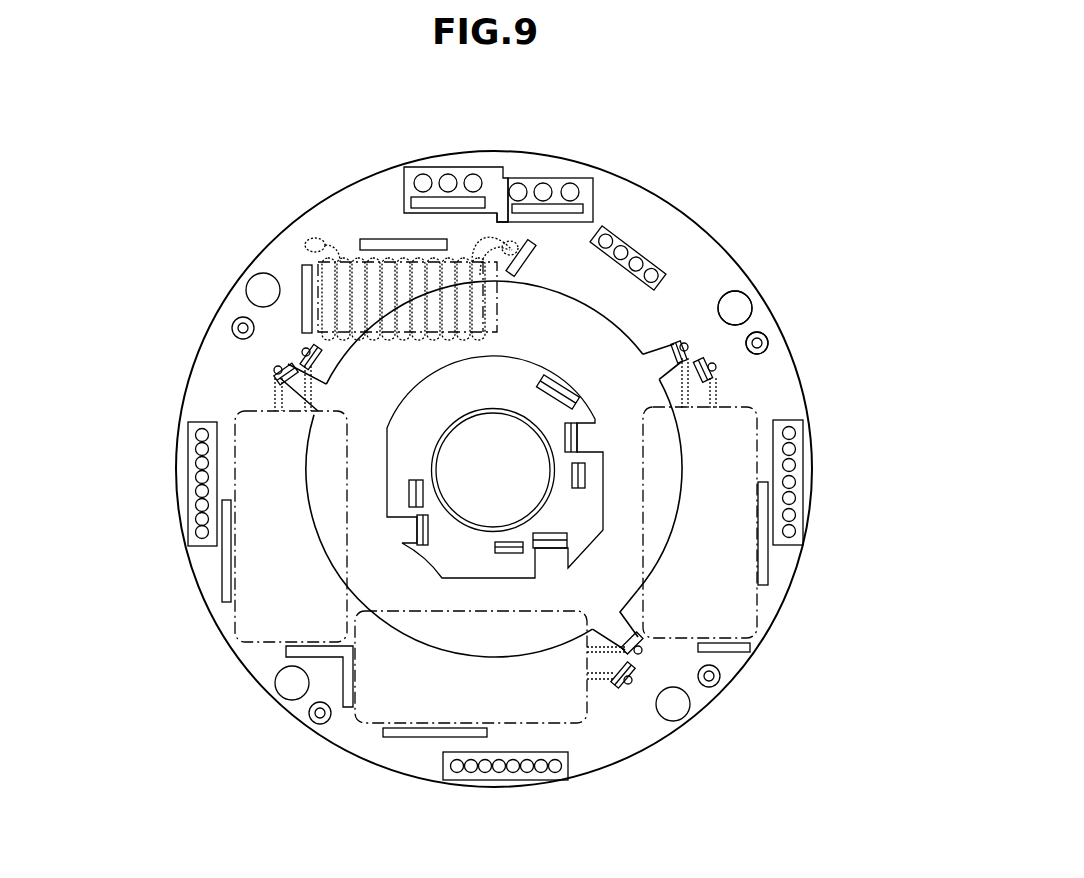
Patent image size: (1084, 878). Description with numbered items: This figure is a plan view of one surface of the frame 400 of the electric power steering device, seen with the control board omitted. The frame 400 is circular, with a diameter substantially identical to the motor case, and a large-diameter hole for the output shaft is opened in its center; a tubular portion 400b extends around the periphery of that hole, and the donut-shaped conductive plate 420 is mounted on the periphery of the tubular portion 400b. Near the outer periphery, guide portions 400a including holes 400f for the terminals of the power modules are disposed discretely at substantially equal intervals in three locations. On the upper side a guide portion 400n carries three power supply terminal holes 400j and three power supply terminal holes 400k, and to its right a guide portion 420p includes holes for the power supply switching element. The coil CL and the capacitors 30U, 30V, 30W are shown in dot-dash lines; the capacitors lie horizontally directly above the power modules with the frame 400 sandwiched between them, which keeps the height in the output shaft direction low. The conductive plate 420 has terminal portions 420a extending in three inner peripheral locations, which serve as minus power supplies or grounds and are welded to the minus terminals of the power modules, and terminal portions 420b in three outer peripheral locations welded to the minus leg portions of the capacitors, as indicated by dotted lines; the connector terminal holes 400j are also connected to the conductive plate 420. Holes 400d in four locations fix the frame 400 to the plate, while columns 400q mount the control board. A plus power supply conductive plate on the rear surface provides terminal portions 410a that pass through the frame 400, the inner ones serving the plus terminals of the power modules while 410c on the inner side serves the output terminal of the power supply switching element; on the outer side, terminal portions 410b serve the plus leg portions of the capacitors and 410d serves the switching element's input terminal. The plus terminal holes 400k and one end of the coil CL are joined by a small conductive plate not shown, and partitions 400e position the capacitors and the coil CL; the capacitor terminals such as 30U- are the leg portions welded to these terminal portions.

The frame 400 is at (667, 198).
The guide portion 400a is at (803, 447).
The tubular portion 400b is at (448, 517).
The hole 400d is at (753, 293).
The partition 400e is at (383, 733).
The hole 400f is at (797, 515).
The power supply terminal hole 400j is at (567, 187).
The power supply terminal hole 400k is at (418, 177).
The guide portion 400n is at (488, 167).
The column 400q is at (768, 343).
The terminal portion 410a is at (410, 492).
The terminal portion 410b is at (625, 686).
The terminal portion 410c is at (557, 387).
The terminal portion 410d is at (515, 247).
The conductive plate 420 is at (655, 577).
The terminal portion 420a is at (555, 553).
The terminal portion 420b is at (687, 690).
The guide portion 420p is at (673, 277).
The capacitor 30U is at (237, 638).
The U-phase negative terminal 30U- is at (276, 372).
The capacitor 30V is at (588, 718).
The capacitor 30W is at (757, 605).
The coil CL is at (370, 265).